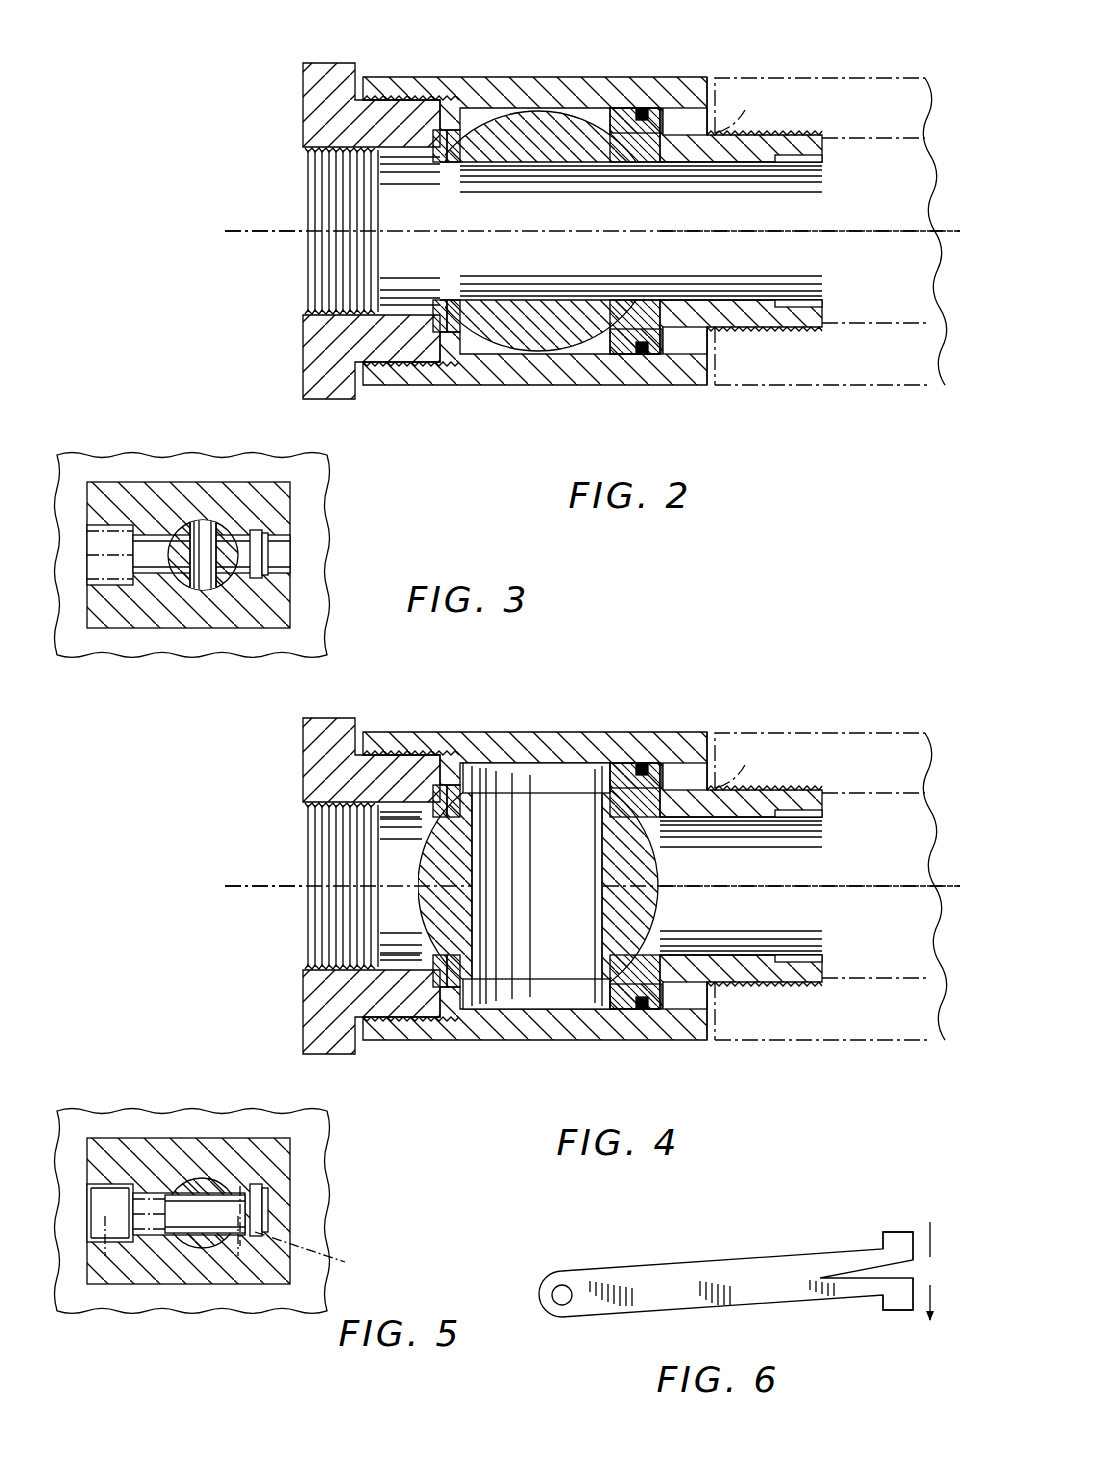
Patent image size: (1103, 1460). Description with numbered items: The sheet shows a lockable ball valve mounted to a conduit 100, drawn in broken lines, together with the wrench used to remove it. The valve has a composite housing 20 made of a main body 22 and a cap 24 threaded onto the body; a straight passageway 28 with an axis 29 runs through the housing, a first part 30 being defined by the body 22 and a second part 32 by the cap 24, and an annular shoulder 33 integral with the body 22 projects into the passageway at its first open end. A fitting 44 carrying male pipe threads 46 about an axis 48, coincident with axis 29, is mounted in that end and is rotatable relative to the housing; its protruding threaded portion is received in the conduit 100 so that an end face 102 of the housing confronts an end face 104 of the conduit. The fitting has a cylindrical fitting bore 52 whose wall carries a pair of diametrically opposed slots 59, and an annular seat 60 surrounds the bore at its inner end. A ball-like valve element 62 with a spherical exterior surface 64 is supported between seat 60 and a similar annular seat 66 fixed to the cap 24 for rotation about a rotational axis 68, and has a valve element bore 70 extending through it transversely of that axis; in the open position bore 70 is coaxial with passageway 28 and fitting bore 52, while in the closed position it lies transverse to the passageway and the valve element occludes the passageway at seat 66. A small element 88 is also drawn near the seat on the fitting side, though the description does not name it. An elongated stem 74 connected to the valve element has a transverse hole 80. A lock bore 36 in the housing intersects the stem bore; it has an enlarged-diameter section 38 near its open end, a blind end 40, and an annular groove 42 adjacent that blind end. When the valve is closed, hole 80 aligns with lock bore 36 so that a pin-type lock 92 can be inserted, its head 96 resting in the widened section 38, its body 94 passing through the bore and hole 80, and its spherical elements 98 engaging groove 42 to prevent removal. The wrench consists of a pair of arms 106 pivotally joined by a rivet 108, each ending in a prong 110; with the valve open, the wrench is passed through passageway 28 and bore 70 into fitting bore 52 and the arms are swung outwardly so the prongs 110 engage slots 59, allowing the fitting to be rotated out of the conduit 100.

In FIG. 2, the housing 20 is at (541, 74).
In FIG. 4, the housing 20 is at (525, 681).
In FIG. 3, the housing 20 is at (185, 446).
In FIG. 5, the housing 20 is at (192, 1170).
In FIG. 2, the main body 22 is at (482, 80).
In FIG. 4, the main body 22 is at (592, 852).
In FIG. 2, the cap 24 is at (320, 106).
In FIG. 4, the cap 24 is at (337, 886).
In FIG. 2, the passageway 28 is at (410, 178).
In FIG. 4, the passageway 28 is at (410, 814).
In FIG. 2, the passageway axis 29 is at (272, 226).
In FIG. 4, the passageway axis 29 is at (264, 852).
In FIG. 2, the first part of passageway 30 is at (594, 116).
In FIG. 4, the first part of passageway 30 is at (621, 837).
In FIG. 2, the second part of passageway 32 is at (390, 262).
In FIG. 4, the second part of passageway 32 is at (321, 886).
In FIG. 2, the annular shoulder 33 is at (679, 352).
In FIG. 4, the annular shoulder 33 is at (690, 917).
In FIG. 3, the lock bore 36 is at (152, 538).
In FIG. 5, the lock bore 36 is at (183, 1279).
In FIG. 3, the enlarged-diameter section 38 is at (106, 530).
In FIG. 5, the enlarged-diameter section 38 is at (116, 1149).
In FIG. 3, the blind end 40 is at (262, 553).
In FIG. 5, the blind end 40 is at (320, 1210).
In FIG. 3, the annular groove 42 is at (256, 566).
In FIG. 5, the annular groove 42 is at (325, 1185).
In FIG. 2, the fitting 44 is at (744, 270).
In FIG. 4, the fitting 44 is at (775, 906).
In FIG. 2, the male pipe threads 46 is at (760, 136).
In FIG. 4, the male pipe threads 46 is at (764, 763).
In FIG. 2, the fitting axis 48 is at (862, 234).
In FIG. 4, the fitting axis 48 is at (891, 854).
In FIG. 2, the fitting bore 52 is at (720, 366).
In FIG. 4, the fitting bore 52 is at (741, 956).
In FIG. 2, the slots 59 is at (822, 158).
In FIG. 4, the slots 59 is at (834, 886).
In FIG. 2, the annular seat 60 is at (614, 352).
In FIG. 4, the annular seat 60 is at (627, 929).
In FIG. 2, the valve element 62 is at (468, 336).
In FIG. 4, the valve element 62 is at (473, 942).
In FIG. 2, the spherical exterior surface 64 is at (586, 356).
In FIG. 4, the spherical exterior surface 64 is at (574, 886).
In FIG. 2, the annular seat 66 is at (444, 334).
In FIG. 4, the annular seat 66 is at (426, 940).
In FIG. 2, the valve element rotational axis 68 is at (533, 238).
In FIG. 4, the valve element rotational axis 68 is at (647, 886).
In FIG. 3, the valve element rotational axis 68 is at (205, 548).
In FIG. 2, the valve element bore 70 is at (552, 268).
In FIG. 4, the valve element bore 70 is at (642, 839).
In FIG. 3, the stem 74 is at (172, 566).
In FIG. 5, the stem 74 is at (205, 1152).
In FIG. 3, the hole 80 is at (207, 580).
In FIG. 5, the hole 80 is at (195, 1300).
In FIG. 2, the seal 88 is at (642, 108).
In FIG. 4, the seal 88 is at (650, 839).
In FIG. 5, the lock 92 is at (250, 1291).
In FIG. 5, the lock body 94 is at (245, 1151).
In FIG. 5, the head 96 is at (82, 1291).
In FIG. 5, the spherical elements 98 is at (320, 1257).
In FIG. 2, the conduit 100 is at (846, 72).
In FIG. 4, the conduit 100 is at (831, 838).
In FIG. 2, the housing end face 102 is at (690, 88).
In FIG. 4, the housing end face 102 is at (699, 830).
In FIG. 2, the conduit end face 104 is at (738, 102).
In FIG. 4, the conduit end face 104 is at (754, 733).
In FIG. 6, the arms 106 is at (718, 1270).
In FIG. 6, the rivet 108 is at (562, 1285).
In FIG. 6, the prongs 110 is at (898, 1242).